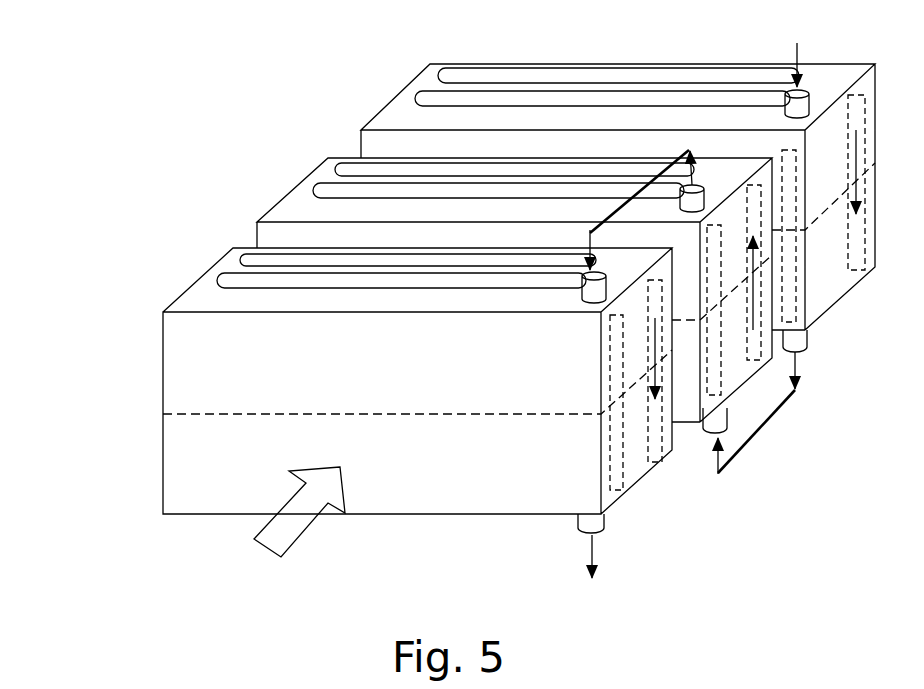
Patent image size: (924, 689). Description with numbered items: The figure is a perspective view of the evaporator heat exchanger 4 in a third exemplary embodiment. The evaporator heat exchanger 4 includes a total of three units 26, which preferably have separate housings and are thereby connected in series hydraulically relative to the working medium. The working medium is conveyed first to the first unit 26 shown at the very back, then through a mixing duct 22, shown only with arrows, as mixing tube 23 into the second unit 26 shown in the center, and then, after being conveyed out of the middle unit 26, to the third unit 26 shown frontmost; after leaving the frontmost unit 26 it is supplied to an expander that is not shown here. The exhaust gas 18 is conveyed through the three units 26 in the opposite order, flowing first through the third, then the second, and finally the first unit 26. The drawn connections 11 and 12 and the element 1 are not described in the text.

The heat exchanger 1 is at (728, 417).
The evaporator heat exchanger 4 is at (467, 330).
The inlet connection 11 is at (703, 193).
The outlet connection 12 is at (808, 338).
The exhaust gas 18 is at (277, 537).
The mixing duct 22 is at (600, 226).
The mixing tube 23 is at (720, 477).
The unit 26 is at (349, 90).